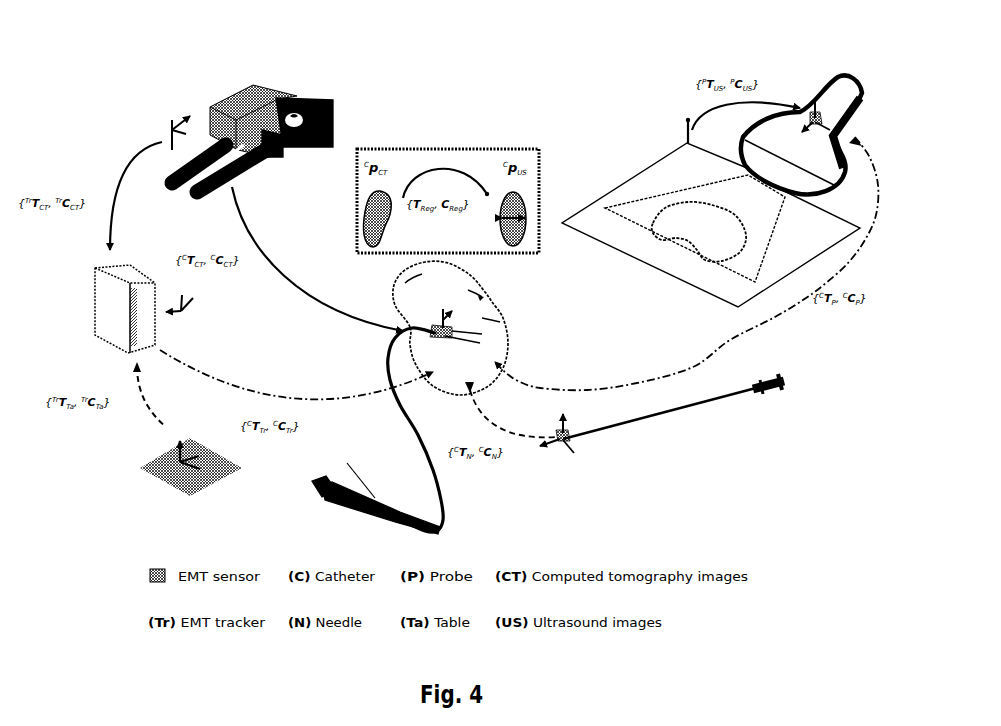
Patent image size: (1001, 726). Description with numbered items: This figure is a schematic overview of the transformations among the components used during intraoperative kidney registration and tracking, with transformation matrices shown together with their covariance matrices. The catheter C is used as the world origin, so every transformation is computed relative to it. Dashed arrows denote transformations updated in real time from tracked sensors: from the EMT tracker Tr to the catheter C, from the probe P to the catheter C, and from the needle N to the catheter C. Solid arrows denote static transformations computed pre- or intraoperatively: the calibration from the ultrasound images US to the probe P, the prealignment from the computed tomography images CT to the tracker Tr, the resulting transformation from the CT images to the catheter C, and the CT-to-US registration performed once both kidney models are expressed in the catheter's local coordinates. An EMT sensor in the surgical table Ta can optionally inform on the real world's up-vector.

The computed tomography images CT is at (243, 130).
The EMT tracker Tr is at (150, 309).
The table Ta is at (181, 467).
The catheter C is at (410, 397).
The ultrasound images US is at (711, 213).
The probe P is at (801, 134).
The needle N is at (662, 420).